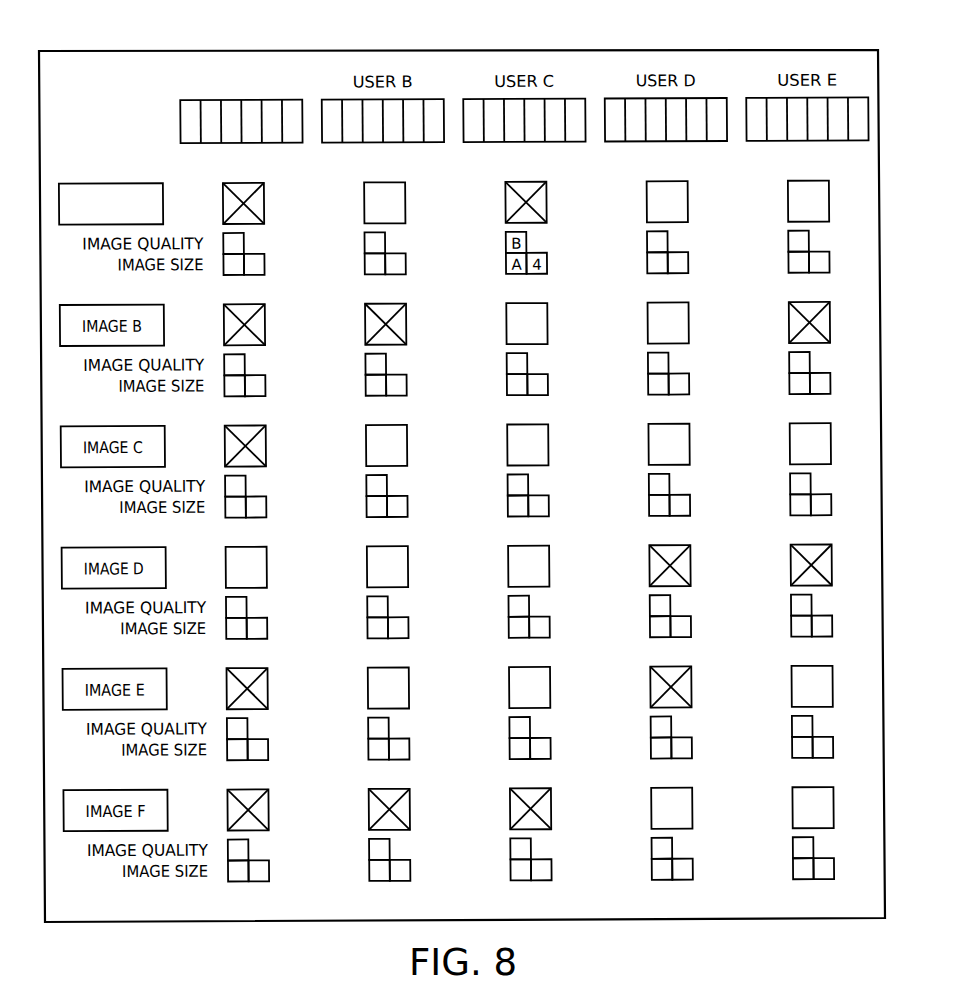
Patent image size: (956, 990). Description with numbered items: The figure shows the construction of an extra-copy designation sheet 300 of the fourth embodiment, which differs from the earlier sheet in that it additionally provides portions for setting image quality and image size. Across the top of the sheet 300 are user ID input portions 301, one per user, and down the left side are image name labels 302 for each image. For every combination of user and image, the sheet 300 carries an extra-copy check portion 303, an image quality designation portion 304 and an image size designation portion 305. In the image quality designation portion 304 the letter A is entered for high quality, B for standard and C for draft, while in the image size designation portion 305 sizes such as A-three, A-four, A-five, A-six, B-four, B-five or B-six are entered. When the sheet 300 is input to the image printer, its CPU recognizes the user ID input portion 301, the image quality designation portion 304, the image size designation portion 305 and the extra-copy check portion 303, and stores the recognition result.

The extra-copy designation sheet 300 is at (447, 50).
The user ID input portion 301 is at (207, 86).
The image name display 302 is at (113, 182).
The extra-copy check portion 303 is at (264, 207).
The image quality designation portion 304 is at (244, 243).
The image size designation portion 305 is at (264, 265).